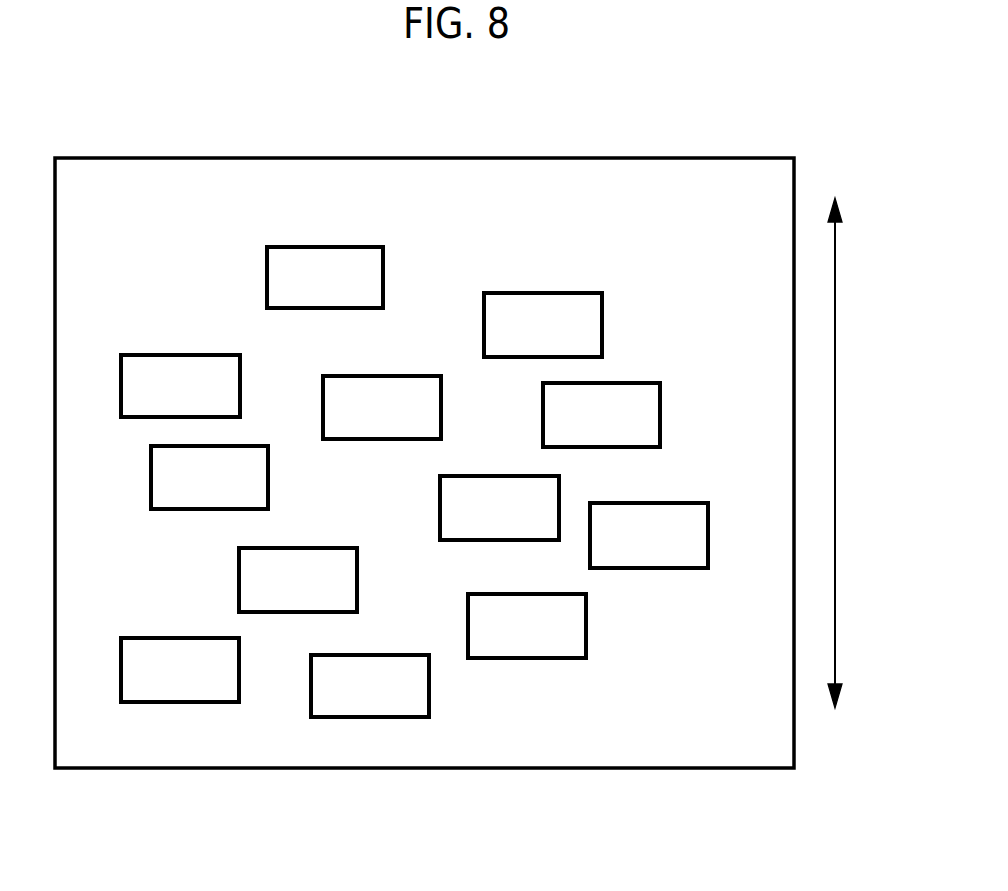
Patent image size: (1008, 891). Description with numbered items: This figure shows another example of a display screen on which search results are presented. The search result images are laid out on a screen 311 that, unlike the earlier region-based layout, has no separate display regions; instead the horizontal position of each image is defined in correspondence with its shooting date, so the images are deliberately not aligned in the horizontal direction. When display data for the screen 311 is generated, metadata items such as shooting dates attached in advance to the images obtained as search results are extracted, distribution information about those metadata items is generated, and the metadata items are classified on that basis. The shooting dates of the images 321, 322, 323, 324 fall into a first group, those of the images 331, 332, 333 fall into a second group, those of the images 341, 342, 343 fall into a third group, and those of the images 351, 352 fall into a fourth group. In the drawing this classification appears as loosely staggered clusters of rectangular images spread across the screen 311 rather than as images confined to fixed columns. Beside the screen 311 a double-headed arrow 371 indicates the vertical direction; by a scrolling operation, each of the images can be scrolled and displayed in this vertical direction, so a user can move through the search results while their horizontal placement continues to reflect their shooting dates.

The screen 311 is at (745, 157).
The image 321 is at (192, 355).
The image 322 is at (152, 638).
The image 323 is at (240, 446).
The image 324 is at (310, 548).
The image 331 is at (329, 247).
The image 332 is at (382, 655).
The image 333 is at (394, 376).
The image 341 is at (455, 476).
The image 342 is at (491, 594).
The image 343 is at (544, 293).
The image 351 is at (615, 383).
The image 352 is at (665, 503).
The arrow 371 is at (835, 410).